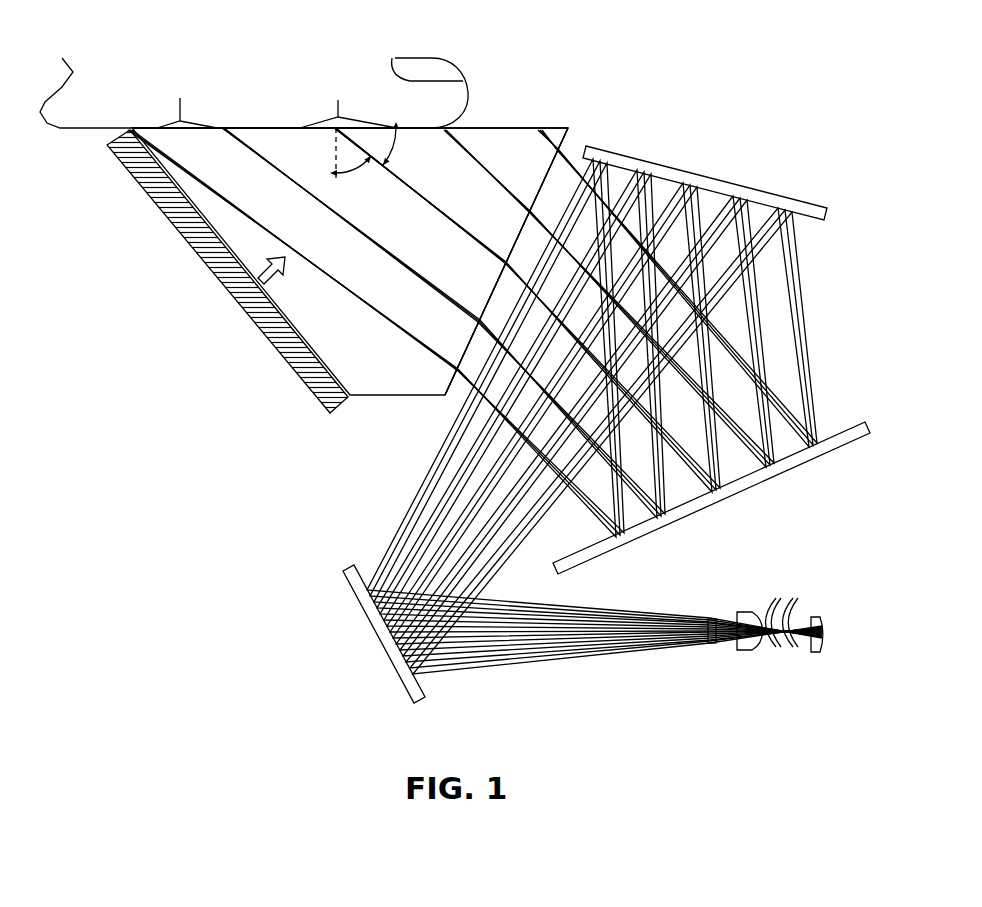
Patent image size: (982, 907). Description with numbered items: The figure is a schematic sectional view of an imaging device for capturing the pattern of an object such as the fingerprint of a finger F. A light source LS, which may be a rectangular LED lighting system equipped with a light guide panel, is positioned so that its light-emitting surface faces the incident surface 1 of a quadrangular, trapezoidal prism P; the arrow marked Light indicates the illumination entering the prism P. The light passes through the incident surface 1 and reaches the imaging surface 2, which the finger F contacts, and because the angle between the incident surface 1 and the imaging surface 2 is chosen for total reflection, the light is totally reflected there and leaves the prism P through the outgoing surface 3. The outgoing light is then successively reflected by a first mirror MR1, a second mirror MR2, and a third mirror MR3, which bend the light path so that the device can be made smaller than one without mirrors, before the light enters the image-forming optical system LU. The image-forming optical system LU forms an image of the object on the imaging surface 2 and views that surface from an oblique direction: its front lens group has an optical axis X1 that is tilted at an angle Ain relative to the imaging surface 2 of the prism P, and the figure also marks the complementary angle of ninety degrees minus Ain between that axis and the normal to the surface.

The finger F is at (467, 92).
The prism P is at (530, 140).
The incident surface 1 is at (332, 362).
The imaging surface 2 is at (568, 128).
The outgoing surface 3 is at (523, 228).
The light source LS is at (213, 270).
The illumination light Light is at (292, 279).
The optical axis of the front lens group X1 is at (413, 192).
The angle Ain is at (377, 166).
The first mirror MR1 is at (748, 485).
The second mirror MR2 is at (715, 180).
The third mirror MR3 is at (380, 630).
The image-forming optical system LU is at (820, 652).